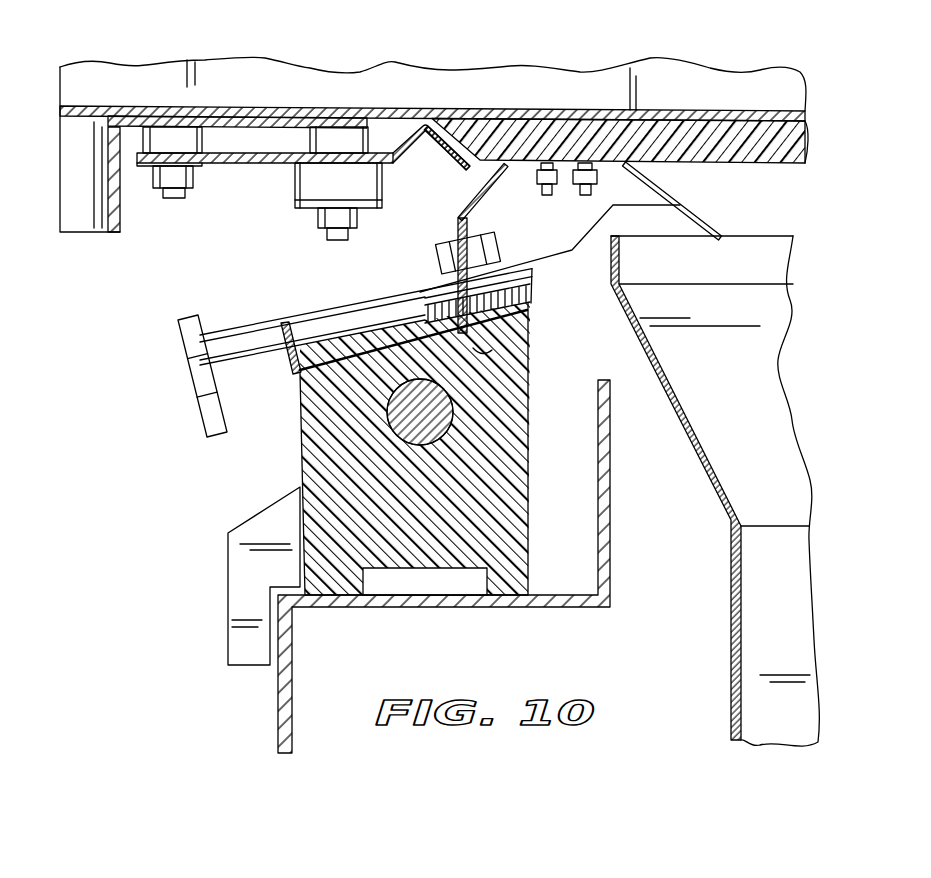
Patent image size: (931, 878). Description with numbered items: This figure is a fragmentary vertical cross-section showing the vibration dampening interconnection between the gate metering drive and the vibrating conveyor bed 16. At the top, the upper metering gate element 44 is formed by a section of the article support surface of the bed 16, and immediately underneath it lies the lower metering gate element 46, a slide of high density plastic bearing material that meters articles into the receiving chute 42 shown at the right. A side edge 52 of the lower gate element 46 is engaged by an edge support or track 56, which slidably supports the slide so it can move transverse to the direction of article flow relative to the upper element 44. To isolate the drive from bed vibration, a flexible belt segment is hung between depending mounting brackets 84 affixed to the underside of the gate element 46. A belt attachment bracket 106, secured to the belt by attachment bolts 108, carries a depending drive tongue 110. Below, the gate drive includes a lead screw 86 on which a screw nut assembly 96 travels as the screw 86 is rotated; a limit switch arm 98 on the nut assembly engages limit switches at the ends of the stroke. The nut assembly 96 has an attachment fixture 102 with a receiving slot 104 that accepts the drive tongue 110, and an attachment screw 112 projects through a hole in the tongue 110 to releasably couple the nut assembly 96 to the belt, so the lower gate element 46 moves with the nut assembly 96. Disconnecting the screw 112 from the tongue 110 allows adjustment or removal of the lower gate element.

The conveyor bed 16 is at (102, 88).
The receiving chute 42 is at (693, 433).
The upper metering gate element 44 is at (577, 110).
The lower metering gate element 46 is at (748, 142).
The side edge 52 is at (385, 108).
The edge support or track 56 is at (443, 157).
The mounting bracket 84 is at (487, 195).
The lead screw 86 is at (428, 412).
The screw nut assembly 96 is at (534, 430).
The limit switch arm 98 is at (247, 583).
The attachment fixture 102 is at (535, 283).
The receiving slot 104 is at (492, 357).
The belt attachment bracket 106 is at (453, 232).
The attachment bolt 108 is at (572, 252).
The drive tongue 110 is at (458, 280).
The attachment screw 112 is at (320, 347).